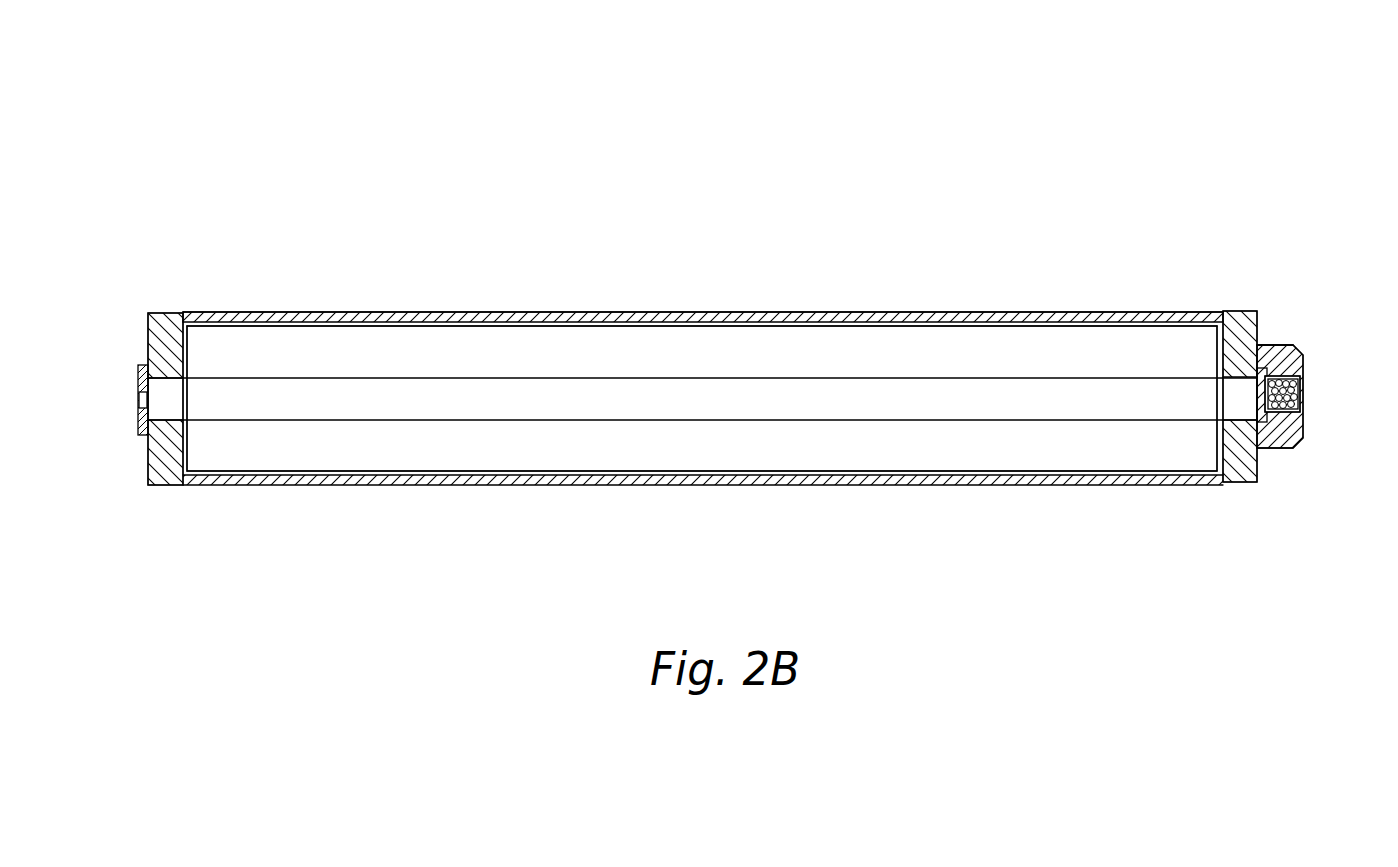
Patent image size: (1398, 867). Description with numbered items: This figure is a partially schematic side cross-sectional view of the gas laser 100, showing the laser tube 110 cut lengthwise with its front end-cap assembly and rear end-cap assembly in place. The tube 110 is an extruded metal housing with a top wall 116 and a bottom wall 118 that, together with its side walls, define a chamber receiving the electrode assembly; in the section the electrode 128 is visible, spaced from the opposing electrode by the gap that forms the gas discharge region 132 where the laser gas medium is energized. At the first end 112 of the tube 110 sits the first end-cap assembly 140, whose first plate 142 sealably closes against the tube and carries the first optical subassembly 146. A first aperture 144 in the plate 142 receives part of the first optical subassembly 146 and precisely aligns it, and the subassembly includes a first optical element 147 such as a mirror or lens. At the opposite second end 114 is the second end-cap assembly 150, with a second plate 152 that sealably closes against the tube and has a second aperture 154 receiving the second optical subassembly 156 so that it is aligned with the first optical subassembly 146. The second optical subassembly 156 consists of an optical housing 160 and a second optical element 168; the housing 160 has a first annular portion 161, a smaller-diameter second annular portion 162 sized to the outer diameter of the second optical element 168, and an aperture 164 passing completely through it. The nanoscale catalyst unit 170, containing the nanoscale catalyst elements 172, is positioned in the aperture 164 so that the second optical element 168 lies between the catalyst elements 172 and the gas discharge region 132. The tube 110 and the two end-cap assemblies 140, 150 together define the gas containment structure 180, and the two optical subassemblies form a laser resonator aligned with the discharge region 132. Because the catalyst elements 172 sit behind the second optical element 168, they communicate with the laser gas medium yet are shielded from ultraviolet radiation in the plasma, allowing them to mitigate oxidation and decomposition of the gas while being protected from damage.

The gas laser 100 is at (998, 110).
The laser tube 110 is at (846, 308).
The first end 112 is at (187, 308).
The second end 114 is at (1222, 304).
The top wall 116 is at (695, 312).
The bottom wall 118 is at (555, 485).
The electrode 128 is at (737, 443).
The gas discharge region 132 is at (966, 377).
The first end-cap assembly 140 is at (149, 284).
The first plate 142 is at (160, 473).
The first aperture 144 is at (172, 416).
The first optical subassembly 146 is at (140, 448).
The first optical element 147 is at (140, 367).
The second end-cap assembly 150 is at (1265, 286).
The second plate 152 is at (1245, 312).
The second aperture 154 is at (1250, 432).
The second optical subassembly 156 is at (1291, 460).
The optical housing 160 is at (1288, 344).
The first annular portion 161 is at (1275, 345).
The second annular portion 162 is at (1290, 373).
The aperture 164 is at (1300, 412).
The second optical element 168 is at (1263, 425).
The nanoscale catalyst unit 170 is at (1300, 379).
The nanoscale catalyst elements 172 is at (1300, 393).
The gas containment structure 180 is at (1050, 296).